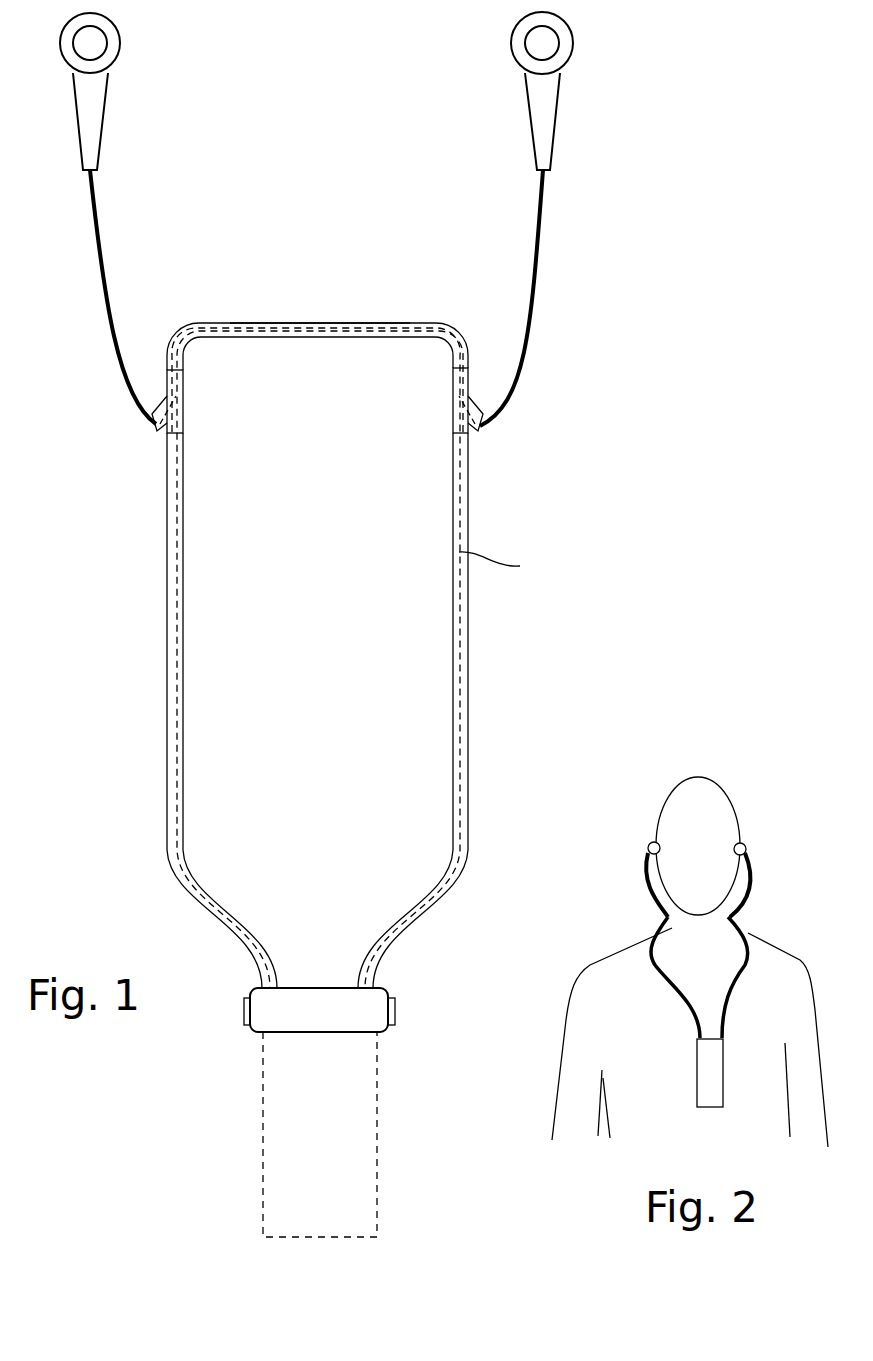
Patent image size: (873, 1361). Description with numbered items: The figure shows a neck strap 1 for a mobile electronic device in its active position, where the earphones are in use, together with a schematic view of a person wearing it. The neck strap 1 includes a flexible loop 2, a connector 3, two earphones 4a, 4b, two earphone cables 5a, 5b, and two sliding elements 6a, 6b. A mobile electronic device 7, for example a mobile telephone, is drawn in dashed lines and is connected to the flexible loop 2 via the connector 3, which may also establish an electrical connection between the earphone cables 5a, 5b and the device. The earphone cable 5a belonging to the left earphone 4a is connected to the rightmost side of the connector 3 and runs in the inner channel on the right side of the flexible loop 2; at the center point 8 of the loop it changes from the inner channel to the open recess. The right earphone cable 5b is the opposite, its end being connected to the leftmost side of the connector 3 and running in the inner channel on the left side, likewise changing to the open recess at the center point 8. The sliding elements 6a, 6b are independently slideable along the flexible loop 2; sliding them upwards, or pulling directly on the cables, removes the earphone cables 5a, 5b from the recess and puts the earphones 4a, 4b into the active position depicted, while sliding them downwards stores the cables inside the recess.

In FIG. 1, the neck strap 1 is at (660, 226).
In FIG. 1, the flexible loop 2 is at (468, 620).
In FIG. 2, the flexible loop 2 is at (748, 967).
In FIG. 1, the connector 3 is at (388, 993).
In FIG. 1, the left earphone 4a is at (121, 42).
In FIG. 2, the left earphone 4a is at (648, 845).
In FIG. 1, the right earphone 4b is at (512, 42).
In FIG. 2, the right earphone 4b is at (746, 845).
In FIG. 1, the left earphone cable 5a is at (103, 245).
In FIG. 2, the left earphone cable 5a is at (645, 875).
In FIG. 1, the right earphone cable 5b is at (532, 232).
In FIG. 2, the right earphone cable 5b is at (752, 878).
In FIG. 1, the sliding element 6a is at (158, 430).
In FIG. 1, the sliding element 6b is at (476, 429).
In FIG. 1, the mobile electronic device 7 is at (372, 1134).
In FIG. 2, the mobile electronic device 7 is at (722, 1060).
In FIG. 1, the center point 8 is at (316, 323).